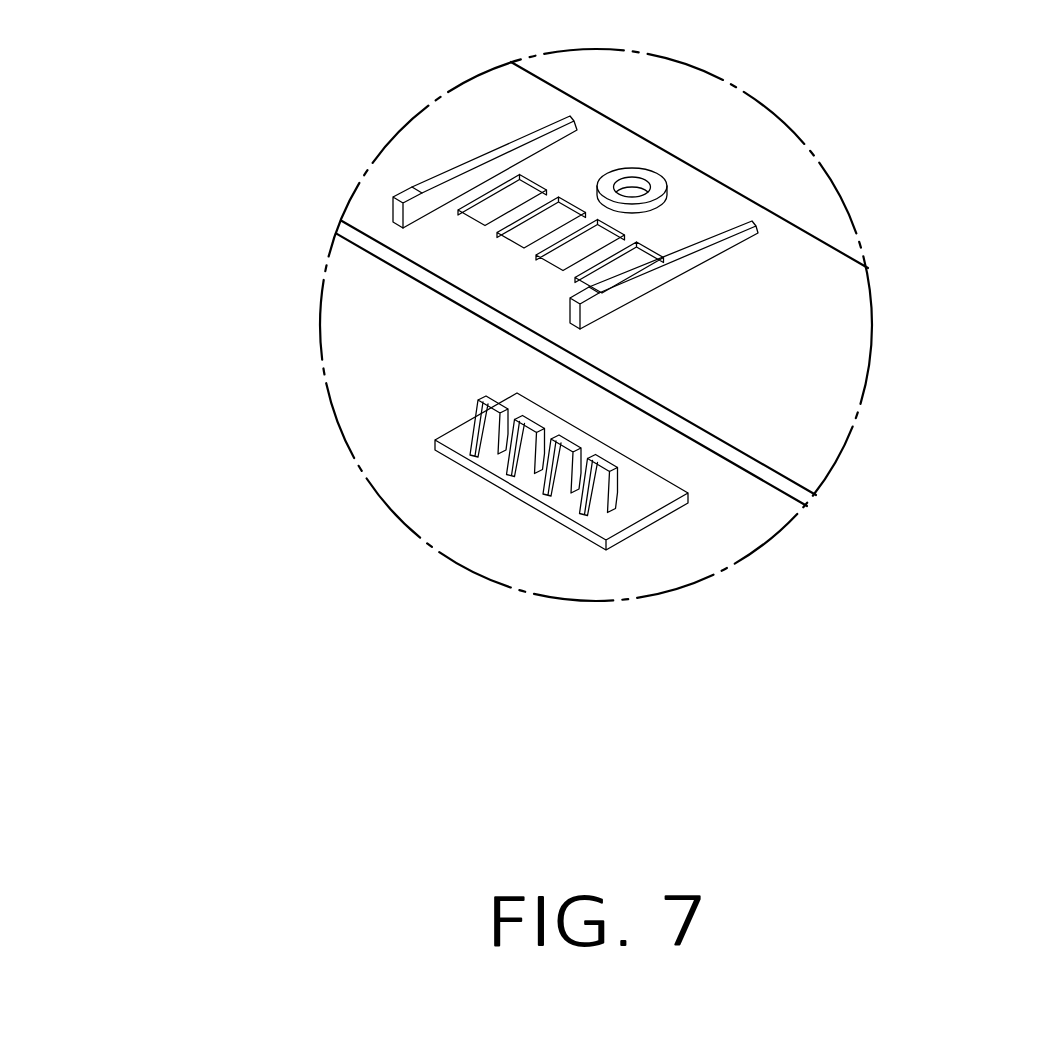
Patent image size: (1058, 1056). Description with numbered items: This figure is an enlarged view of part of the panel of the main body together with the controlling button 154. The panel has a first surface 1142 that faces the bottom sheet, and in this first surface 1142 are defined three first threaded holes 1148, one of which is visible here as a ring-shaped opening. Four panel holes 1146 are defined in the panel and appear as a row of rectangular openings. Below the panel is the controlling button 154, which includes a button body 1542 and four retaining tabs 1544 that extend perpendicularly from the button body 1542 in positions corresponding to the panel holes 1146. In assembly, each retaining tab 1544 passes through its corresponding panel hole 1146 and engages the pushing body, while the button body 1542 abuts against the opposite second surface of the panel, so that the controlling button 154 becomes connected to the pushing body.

The first surface 1142 is at (507, 108).
The panel holes 1146 is at (490, 205).
The first threaded holes 1148 is at (640, 187).
The controlling button 154 is at (372, 402).
The button body 1542 is at (462, 442).
The retaining tabs 1544 is at (485, 395).